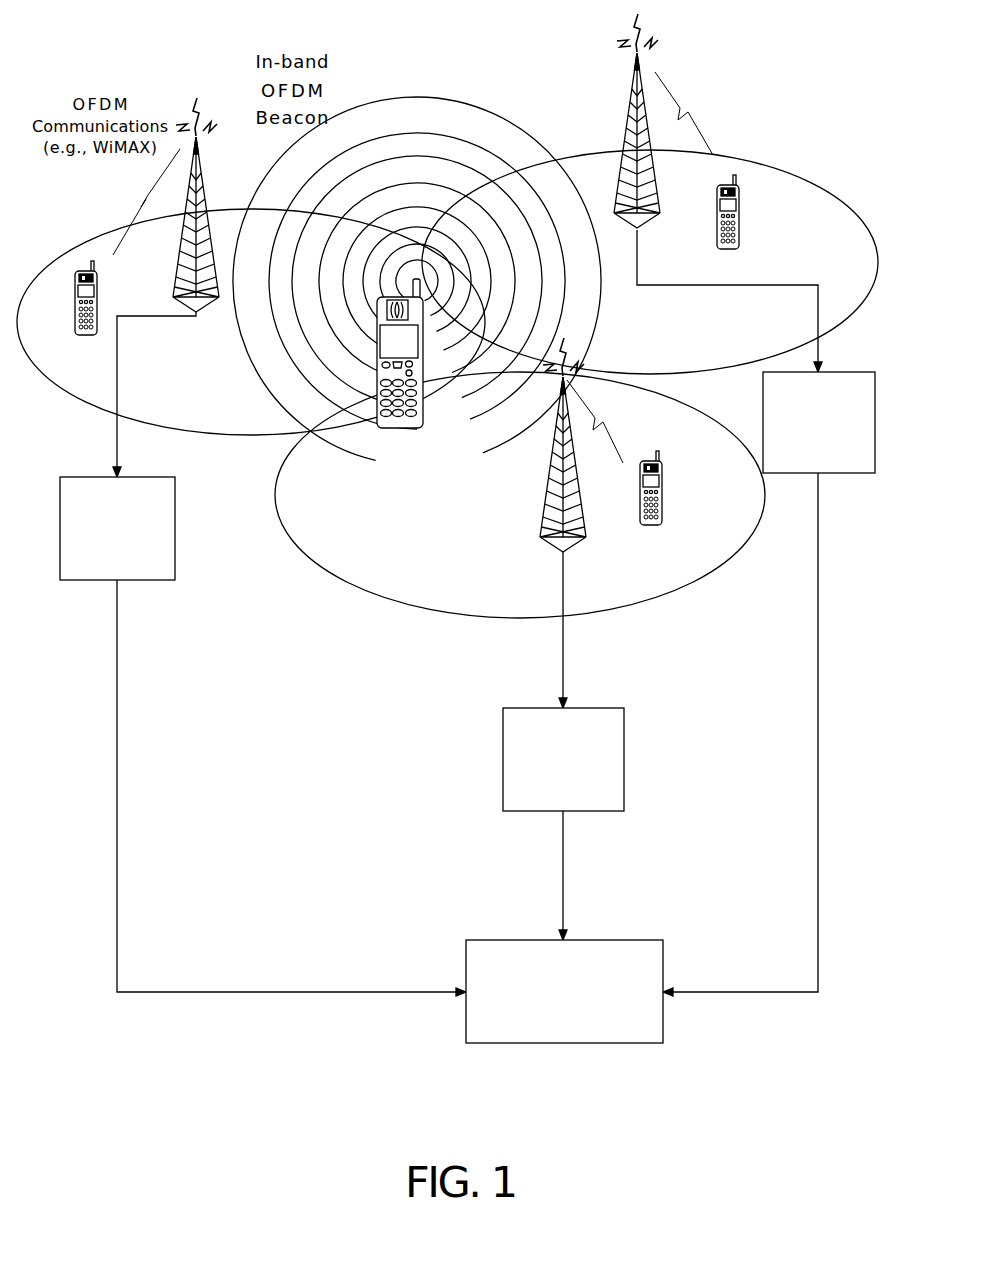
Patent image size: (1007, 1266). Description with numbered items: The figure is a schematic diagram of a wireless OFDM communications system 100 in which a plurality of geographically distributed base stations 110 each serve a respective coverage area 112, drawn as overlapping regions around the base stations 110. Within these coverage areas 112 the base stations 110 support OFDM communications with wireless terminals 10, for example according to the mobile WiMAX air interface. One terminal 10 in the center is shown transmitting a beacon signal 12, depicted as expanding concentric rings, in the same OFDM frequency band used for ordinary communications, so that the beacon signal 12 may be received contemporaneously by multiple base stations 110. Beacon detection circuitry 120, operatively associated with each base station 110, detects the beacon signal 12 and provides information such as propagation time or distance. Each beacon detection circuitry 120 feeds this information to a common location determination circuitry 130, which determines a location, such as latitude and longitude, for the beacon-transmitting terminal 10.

The wireless OFDM communications system 100 is at (161, 72).
The wireless terminal 10 is at (98, 297).
The beacon signal 12 is at (484, 81).
The base station 110 is at (178, 265).
The coverage area 112 is at (231, 428).
The beacon detection circuitry 120 is at (175, 530).
The location determination circuitry 130 is at (565, 1045).